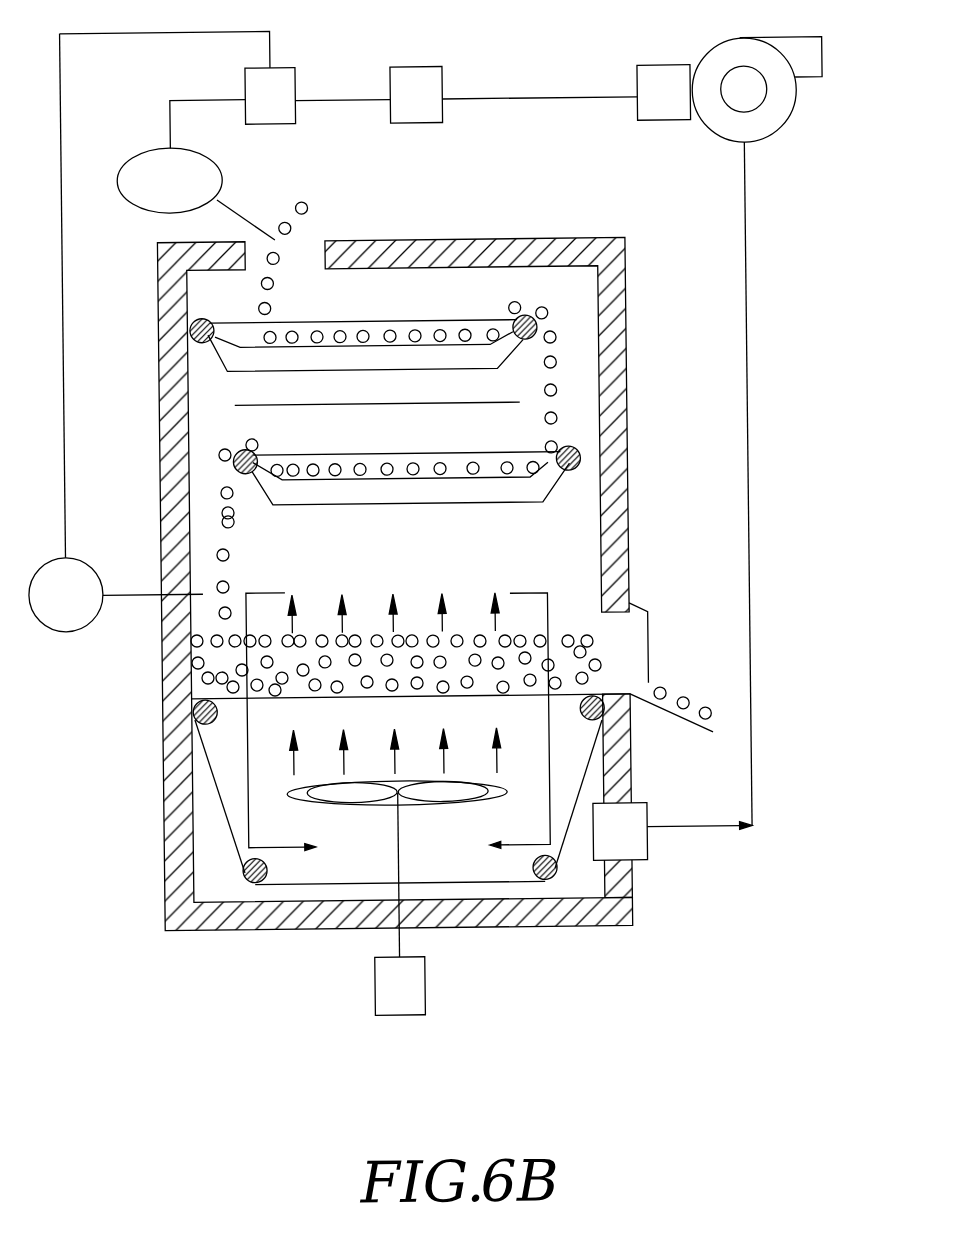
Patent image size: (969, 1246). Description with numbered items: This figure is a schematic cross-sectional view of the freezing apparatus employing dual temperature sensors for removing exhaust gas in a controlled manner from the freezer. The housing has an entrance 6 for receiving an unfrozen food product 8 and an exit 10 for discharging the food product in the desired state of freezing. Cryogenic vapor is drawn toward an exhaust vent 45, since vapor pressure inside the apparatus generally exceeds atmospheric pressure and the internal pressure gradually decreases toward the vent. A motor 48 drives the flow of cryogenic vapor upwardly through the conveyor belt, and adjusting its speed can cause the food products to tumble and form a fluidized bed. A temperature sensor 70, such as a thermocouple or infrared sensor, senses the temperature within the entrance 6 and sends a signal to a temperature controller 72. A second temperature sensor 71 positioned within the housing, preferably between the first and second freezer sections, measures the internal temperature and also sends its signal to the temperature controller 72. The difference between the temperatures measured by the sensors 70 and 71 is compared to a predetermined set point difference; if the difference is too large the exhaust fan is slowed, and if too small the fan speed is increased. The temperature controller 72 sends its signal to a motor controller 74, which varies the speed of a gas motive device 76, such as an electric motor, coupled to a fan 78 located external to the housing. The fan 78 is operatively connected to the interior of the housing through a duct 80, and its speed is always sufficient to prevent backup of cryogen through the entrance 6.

The entrance 6 is at (311, 257).
The unfrozen food product 8 is at (313, 201).
The exit 10 is at (663, 656).
The exhaust vent 45 is at (632, 848).
The motor 48 is at (410, 1001).
The temperature sensor 70 is at (161, 194).
The second temperature sensor 71 is at (52, 606).
The temperature controller 72 is at (262, 110).
The motor controller 74 is at (408, 110).
The gas motive device 76 is at (684, 111).
The fan 78 is at (724, 66).
The duct 80 is at (753, 366).